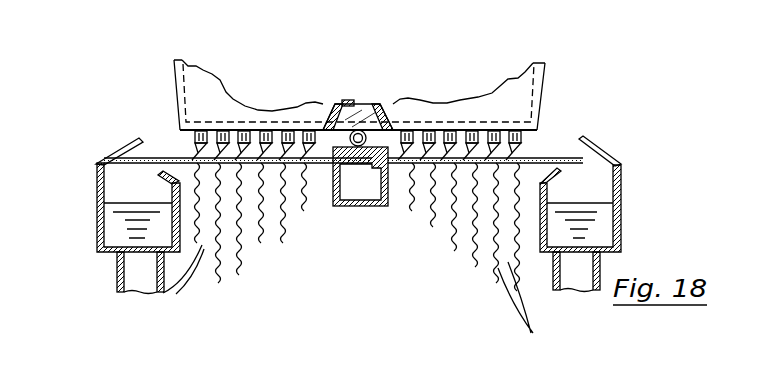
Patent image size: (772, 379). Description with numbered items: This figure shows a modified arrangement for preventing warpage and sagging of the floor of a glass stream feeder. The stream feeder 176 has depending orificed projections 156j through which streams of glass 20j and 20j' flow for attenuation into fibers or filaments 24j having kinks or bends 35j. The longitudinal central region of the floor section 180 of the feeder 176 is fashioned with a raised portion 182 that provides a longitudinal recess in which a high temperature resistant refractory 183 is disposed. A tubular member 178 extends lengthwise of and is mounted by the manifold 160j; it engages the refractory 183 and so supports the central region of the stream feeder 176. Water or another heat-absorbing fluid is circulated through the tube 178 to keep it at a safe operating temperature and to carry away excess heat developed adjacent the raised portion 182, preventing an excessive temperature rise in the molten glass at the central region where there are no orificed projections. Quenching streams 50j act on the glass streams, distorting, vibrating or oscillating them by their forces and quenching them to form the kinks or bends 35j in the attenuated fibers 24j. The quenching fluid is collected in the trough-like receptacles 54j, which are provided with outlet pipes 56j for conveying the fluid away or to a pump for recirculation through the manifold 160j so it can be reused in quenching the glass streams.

The stream feeder 176 is at (176, 85).
The tubular member 178 is at (393, 130).
The floor section 180 is at (272, 128).
The raised portion 182 is at (352, 103).
The refractory 183 is at (357, 104).
The orificed projections 156j is at (484, 82).
The stream of glass 20j is at (331, 137).
The stream of glass 20j' is at (580, 133).
The manifold 160j is at (322, 205).
The quenching streams 50j is at (140, 164).
The trough-like receptacles 54j is at (97, 222).
The outlet pipes 56j is at (118, 272).
The attenuated fibers or filaments 24j is at (248, 230).
The kinks or bends 35j is at (163, 296).